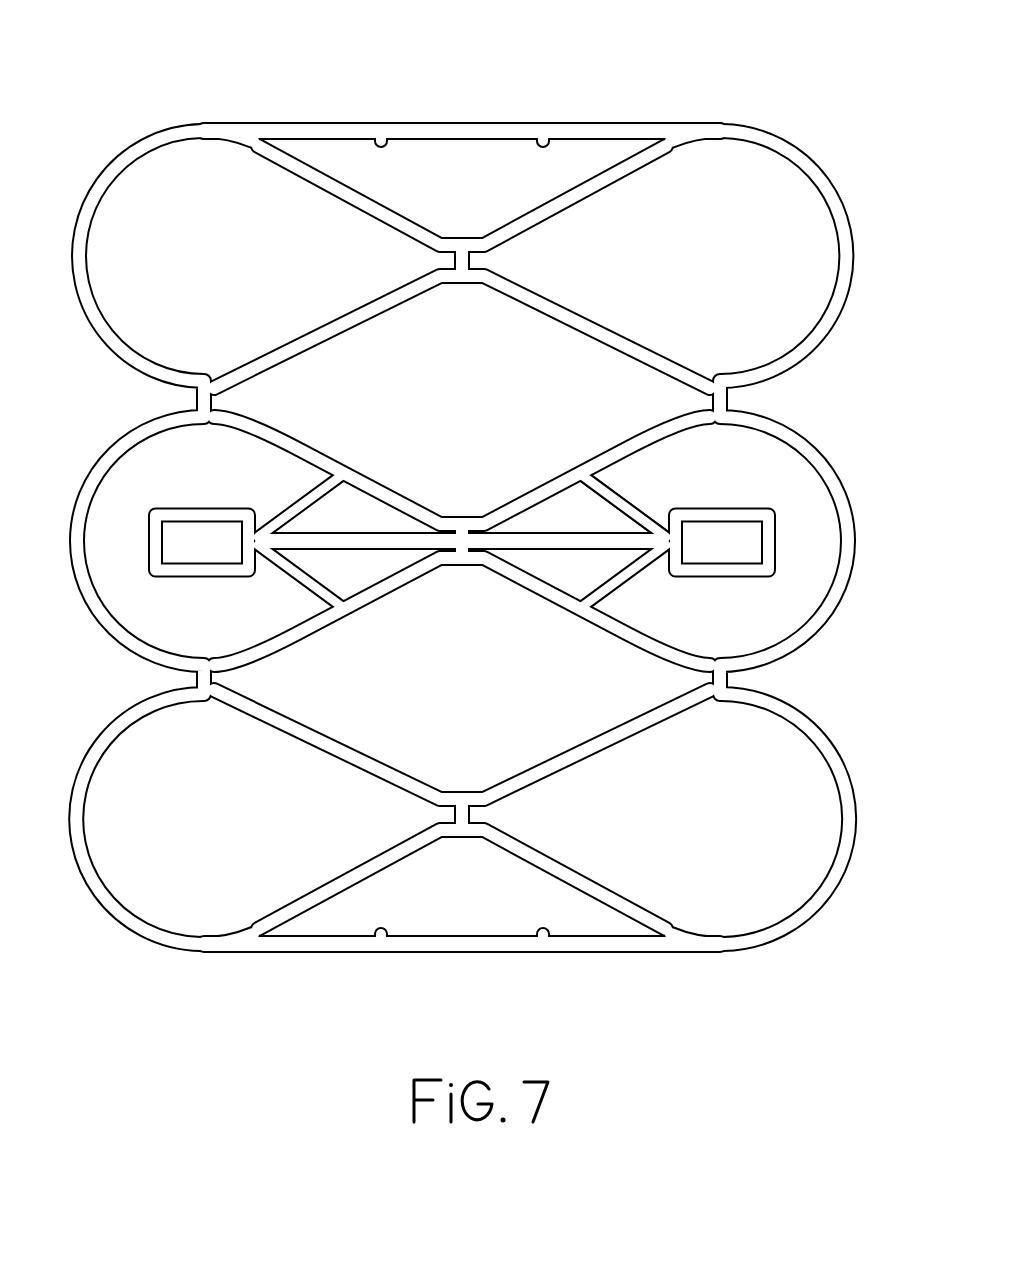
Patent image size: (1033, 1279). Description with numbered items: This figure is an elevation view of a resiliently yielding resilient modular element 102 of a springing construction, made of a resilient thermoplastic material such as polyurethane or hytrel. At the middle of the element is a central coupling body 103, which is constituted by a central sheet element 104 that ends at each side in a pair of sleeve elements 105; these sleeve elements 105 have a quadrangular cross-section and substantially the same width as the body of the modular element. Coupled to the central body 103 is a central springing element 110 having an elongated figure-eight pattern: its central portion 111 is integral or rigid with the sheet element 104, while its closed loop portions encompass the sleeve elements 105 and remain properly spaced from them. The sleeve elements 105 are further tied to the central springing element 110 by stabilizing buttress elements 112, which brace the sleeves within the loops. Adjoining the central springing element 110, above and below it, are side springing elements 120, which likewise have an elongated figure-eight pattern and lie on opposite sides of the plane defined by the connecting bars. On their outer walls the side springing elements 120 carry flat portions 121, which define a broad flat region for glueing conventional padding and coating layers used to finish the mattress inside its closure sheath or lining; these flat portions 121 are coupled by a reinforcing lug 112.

The resilient modular element 102 is at (789, 112).
The central coupling body 103 is at (568, 553).
The central sheet element 104 is at (575, 533).
The sleeve element 105 is at (187, 573).
The central springing element 110 is at (339, 453).
The central portion 111 is at (455, 542).
The stabilizing buttress element 112 is at (467, 123).
The side springing element 120 is at (123, 132).
The flat portion 121 is at (260, 138).